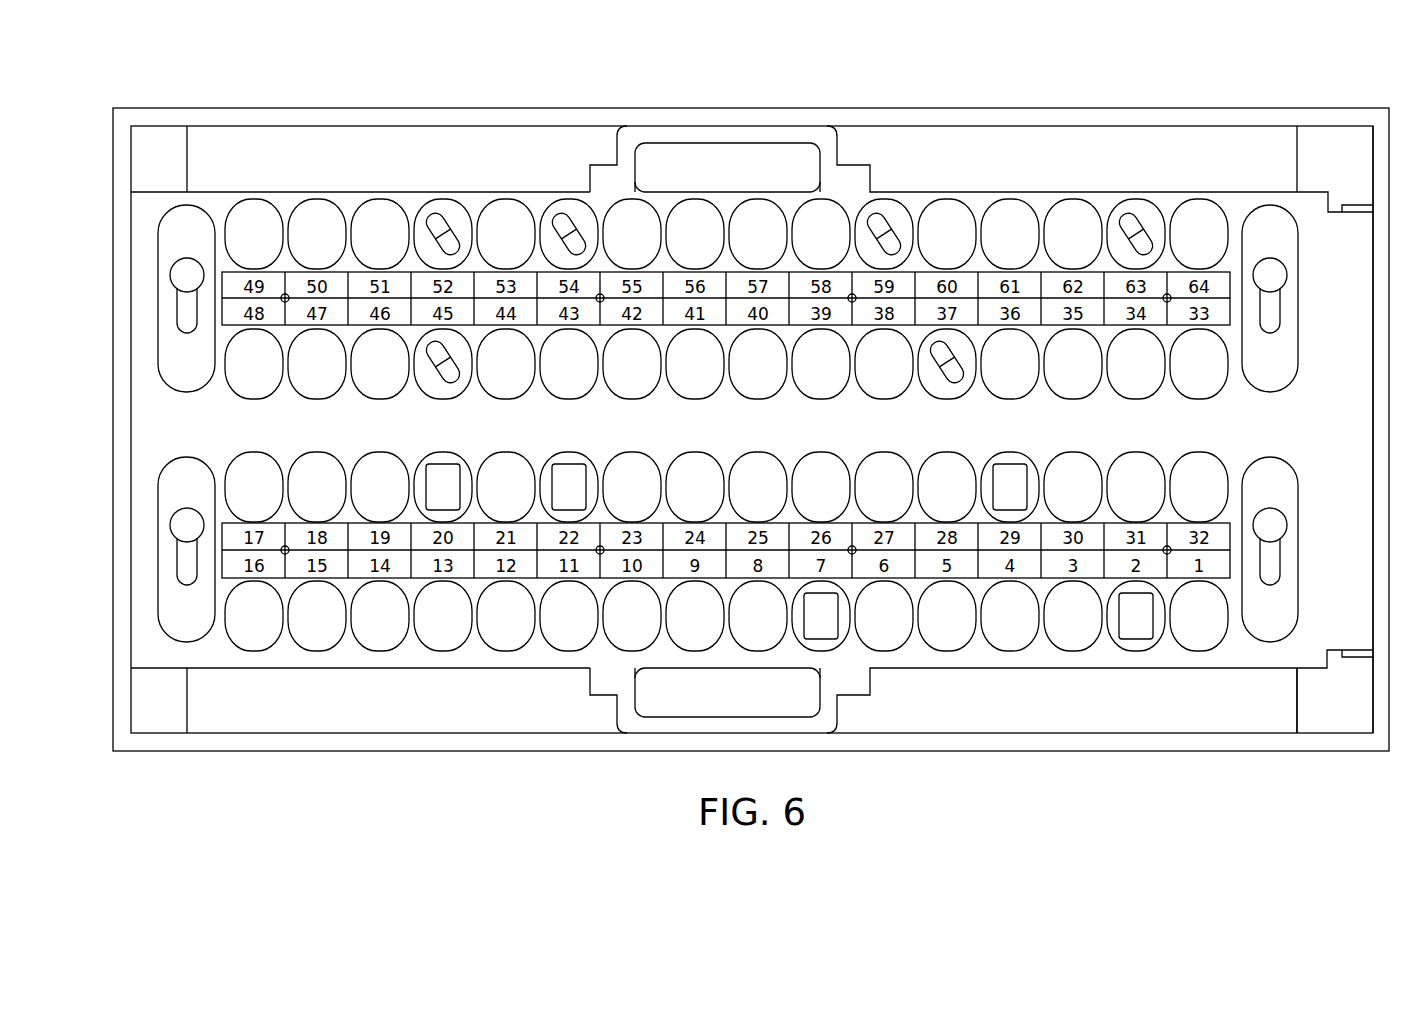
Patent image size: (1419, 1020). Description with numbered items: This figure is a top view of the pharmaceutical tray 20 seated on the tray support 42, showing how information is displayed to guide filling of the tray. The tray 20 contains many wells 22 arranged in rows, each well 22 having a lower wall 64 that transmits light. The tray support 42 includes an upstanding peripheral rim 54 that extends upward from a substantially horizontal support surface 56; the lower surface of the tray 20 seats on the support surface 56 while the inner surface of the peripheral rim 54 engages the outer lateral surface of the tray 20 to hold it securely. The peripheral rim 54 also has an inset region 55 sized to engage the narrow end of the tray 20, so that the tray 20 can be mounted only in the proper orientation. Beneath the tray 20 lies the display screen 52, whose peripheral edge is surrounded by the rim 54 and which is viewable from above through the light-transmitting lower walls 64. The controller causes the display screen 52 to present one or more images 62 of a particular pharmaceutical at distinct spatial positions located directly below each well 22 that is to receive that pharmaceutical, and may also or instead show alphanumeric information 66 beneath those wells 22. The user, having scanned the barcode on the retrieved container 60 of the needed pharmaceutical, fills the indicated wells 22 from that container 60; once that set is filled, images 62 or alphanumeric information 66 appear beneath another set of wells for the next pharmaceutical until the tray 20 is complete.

The tray 20 is at (274, 436).
The wells 22 is at (378, 222).
The tray support 42 is at (1180, 742).
The display screen 52 is at (1013, 683).
The peripheral rim 54 is at (1383, 616).
The inset region 55 is at (1356, 205).
The support surface 56 is at (1333, 708).
The container 60 is at (1134, 634).
The images 62 is at (440, 228).
The lower wall 64 is at (505, 222).
The alphanumeric information 66 is at (452, 472).